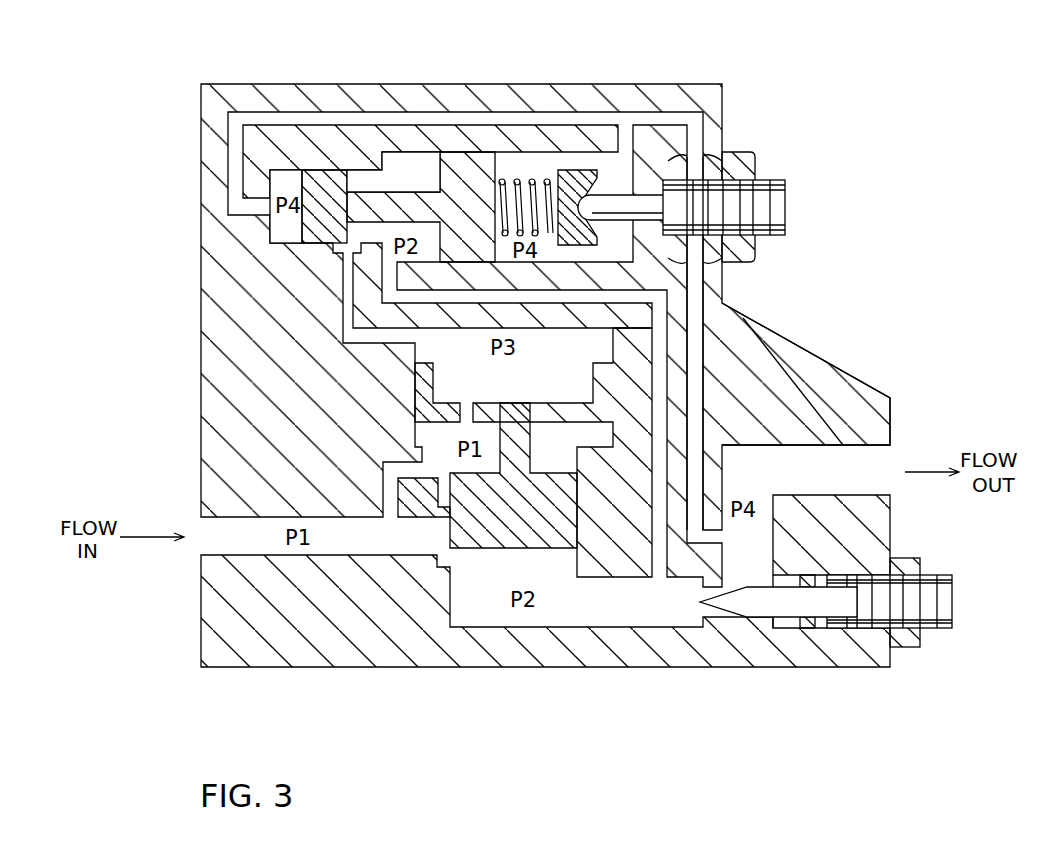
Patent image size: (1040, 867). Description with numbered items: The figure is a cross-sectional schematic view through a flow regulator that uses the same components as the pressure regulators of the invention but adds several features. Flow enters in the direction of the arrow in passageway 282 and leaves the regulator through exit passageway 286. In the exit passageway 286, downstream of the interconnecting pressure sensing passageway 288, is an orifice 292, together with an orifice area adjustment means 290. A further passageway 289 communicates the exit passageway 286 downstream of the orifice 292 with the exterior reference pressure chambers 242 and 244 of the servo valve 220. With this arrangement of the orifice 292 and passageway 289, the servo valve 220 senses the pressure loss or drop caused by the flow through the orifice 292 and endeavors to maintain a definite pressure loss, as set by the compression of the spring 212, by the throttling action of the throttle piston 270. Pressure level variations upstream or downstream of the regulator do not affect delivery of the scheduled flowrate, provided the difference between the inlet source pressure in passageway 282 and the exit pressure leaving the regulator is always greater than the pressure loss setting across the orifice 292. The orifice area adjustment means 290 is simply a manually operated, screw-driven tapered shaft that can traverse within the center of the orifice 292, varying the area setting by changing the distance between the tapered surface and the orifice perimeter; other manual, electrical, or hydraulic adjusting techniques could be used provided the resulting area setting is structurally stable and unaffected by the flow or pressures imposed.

The spring 212 is at (528, 175).
The servo valve 220 is at (390, 180).
The exterior reference pressure chamber 242 is at (505, 165).
The exterior reference pressure chamber 244 is at (287, 180).
The throttle piston 270 is at (500, 549).
The passageway 282 is at (276, 512).
The exit passageway 286 is at (845, 445).
The P2 pressure sensing passageway 288 is at (693, 403).
The passageway 289 is at (740, 318).
The orifice area adjustment means 290 is at (928, 577).
The orifice 292 is at (700, 610).